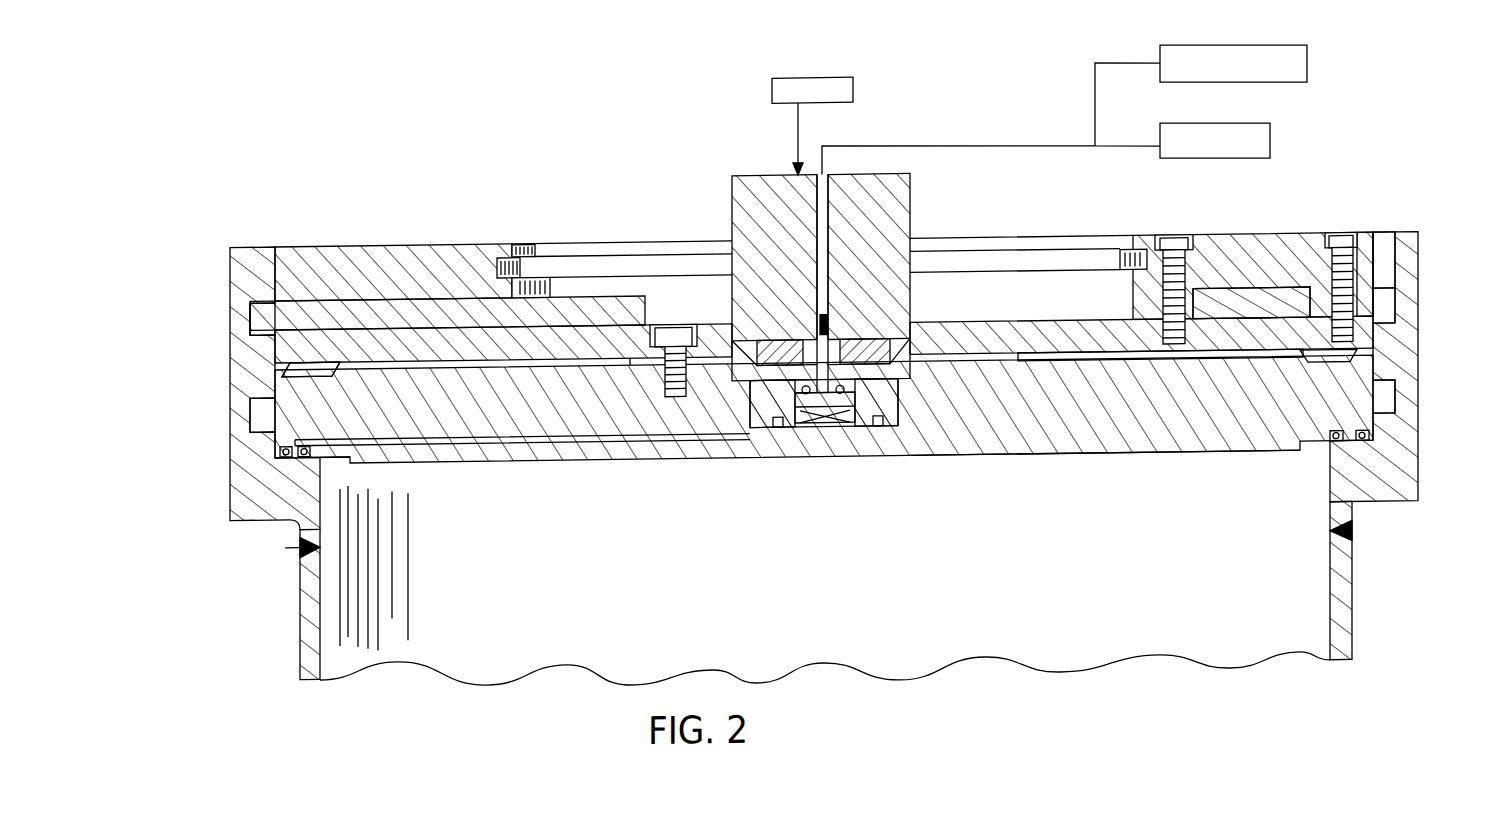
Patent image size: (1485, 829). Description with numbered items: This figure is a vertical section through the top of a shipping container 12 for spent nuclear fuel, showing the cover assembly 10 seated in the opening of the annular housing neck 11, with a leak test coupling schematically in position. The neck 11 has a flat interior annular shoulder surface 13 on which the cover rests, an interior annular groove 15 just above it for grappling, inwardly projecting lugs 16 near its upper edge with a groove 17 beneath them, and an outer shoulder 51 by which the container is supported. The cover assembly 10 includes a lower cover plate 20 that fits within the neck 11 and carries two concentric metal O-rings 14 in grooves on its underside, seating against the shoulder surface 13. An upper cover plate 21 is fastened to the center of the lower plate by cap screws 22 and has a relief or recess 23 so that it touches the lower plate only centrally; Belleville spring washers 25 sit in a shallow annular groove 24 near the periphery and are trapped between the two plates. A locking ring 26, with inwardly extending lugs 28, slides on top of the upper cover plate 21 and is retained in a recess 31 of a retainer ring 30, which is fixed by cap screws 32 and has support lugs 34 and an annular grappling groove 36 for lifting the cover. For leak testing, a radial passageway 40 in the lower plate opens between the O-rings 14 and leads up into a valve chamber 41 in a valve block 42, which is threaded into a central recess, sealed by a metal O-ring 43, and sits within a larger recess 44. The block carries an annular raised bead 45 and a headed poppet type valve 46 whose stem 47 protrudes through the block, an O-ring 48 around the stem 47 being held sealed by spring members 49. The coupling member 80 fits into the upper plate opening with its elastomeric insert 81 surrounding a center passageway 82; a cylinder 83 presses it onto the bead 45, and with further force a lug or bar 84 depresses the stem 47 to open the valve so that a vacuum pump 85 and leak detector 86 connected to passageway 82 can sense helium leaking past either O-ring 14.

The cover assembly 10 is at (460, 225).
The annular housing neck 11 is at (240, 371).
The container 12 is at (312, 611).
The interior annular shoulder surface 13 is at (322, 462).
The metal O-rings 14 is at (312, 456).
The interior annular groove 15 is at (260, 417).
The lugs 16 is at (237, 250).
The groove 17 is at (255, 318).
The lower cover plate 20 is at (513, 423).
The upper cover plate 21 is at (1012, 343).
The cap screws 22 is at (676, 340).
The relief or recess 23 is at (1062, 368).
The shallow annular groove 24 is at (305, 379).
The Belleville spring washers 25 is at (330, 367).
The locking ring 26 is at (567, 326).
The lugs 28 is at (648, 304).
The retainer ring 30 is at (1205, 258).
The recess 31 is at (1232, 302).
The cap screws 32 is at (1392, 280).
The support lugs 34 is at (1372, 313).
The annular grappling groove 36 is at (1122, 272).
The radial passageway 40 is at (440, 447).
The valve chamber 41 is at (856, 438).
The valve block 42 is at (898, 428).
The metal O-ring 43 is at (776, 428).
The recess 44 is at (955, 458).
The annular raised bead 45 is at (766, 372).
The headed poppet type valve 46 is at (824, 410).
The stem 47 is at (842, 349).
The O-ring 48 is at (803, 400).
The spring members 49 is at (815, 438).
The shoulder 51 is at (1383, 516).
The coupling member 80 is at (732, 222).
The elastomeric insert 81 is at (795, 348).
The center passageway 82 is at (824, 206).
The cylinder 83 is at (853, 96).
The lug or bar 84 is at (824, 322).
The vacuum pump 85 is at (1196, 135).
The leak detector 86 is at (1307, 86).